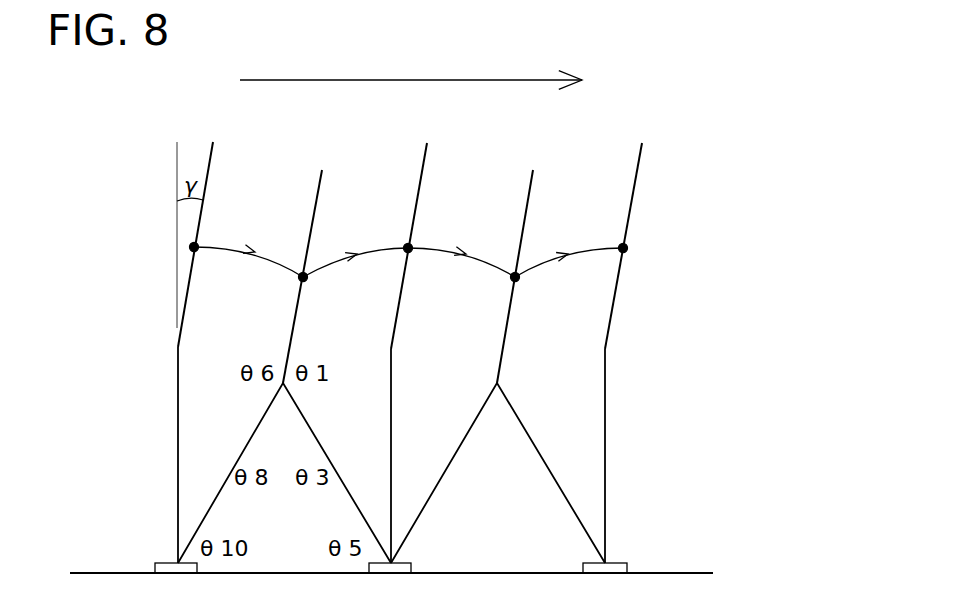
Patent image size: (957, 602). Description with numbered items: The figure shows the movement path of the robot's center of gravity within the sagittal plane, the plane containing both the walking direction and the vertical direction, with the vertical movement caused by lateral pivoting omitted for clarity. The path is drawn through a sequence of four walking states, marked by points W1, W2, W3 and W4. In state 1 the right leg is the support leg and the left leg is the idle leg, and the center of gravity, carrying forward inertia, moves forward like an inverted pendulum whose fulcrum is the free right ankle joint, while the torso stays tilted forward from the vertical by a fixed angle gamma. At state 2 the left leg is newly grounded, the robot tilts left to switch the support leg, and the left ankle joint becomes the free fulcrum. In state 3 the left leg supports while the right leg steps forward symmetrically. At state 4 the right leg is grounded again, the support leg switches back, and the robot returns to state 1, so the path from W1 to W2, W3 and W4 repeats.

The state 1 is at (206, 180).
The state 2 is at (319, 190).
The state 3 is at (428, 178).
The state 4 is at (535, 190).
The welding point W1 is at (409, 235).
The welding point W2 is at (284, 283).
The welding point W3 is at (393, 236).
The welding point W4 is at (496, 284).